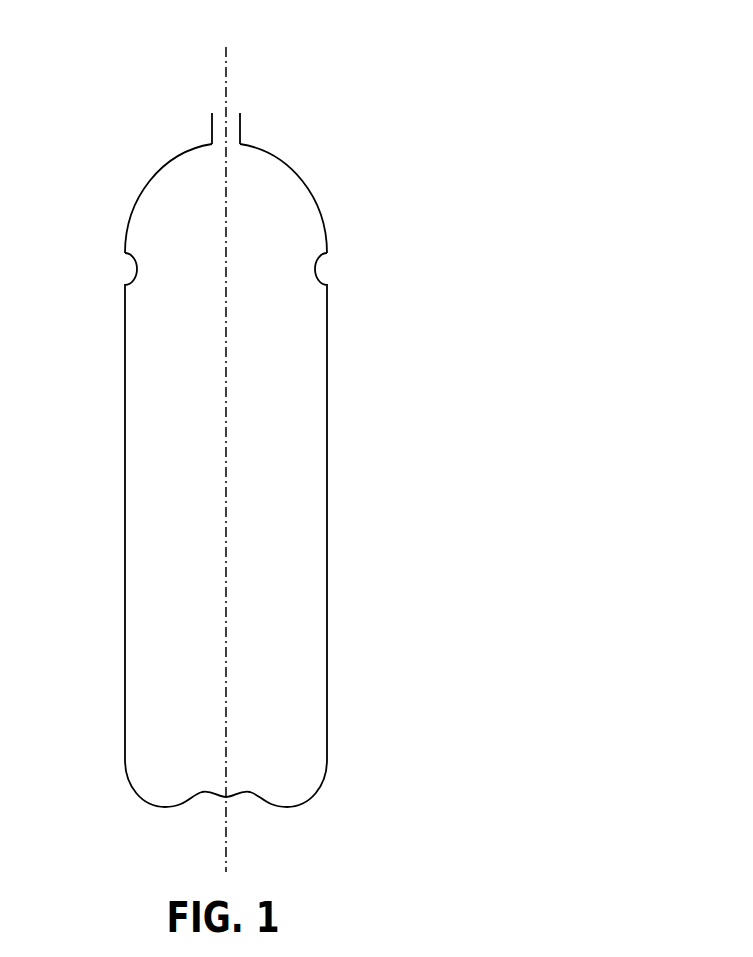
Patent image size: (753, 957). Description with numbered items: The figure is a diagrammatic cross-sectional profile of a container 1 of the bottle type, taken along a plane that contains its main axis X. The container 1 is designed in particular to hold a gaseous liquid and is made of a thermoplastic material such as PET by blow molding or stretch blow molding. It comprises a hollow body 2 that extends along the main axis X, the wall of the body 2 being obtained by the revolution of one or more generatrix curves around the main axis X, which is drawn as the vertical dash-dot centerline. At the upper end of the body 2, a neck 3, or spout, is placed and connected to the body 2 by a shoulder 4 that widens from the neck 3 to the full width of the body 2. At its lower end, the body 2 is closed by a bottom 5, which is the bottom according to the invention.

The container 1 is at (240, 435).
The hollow body 2 is at (329, 432).
The neck 3 is at (210, 130).
The shoulder 4 is at (283, 146).
The bottom 5 is at (124, 763).
The main axis X is at (233, 65).